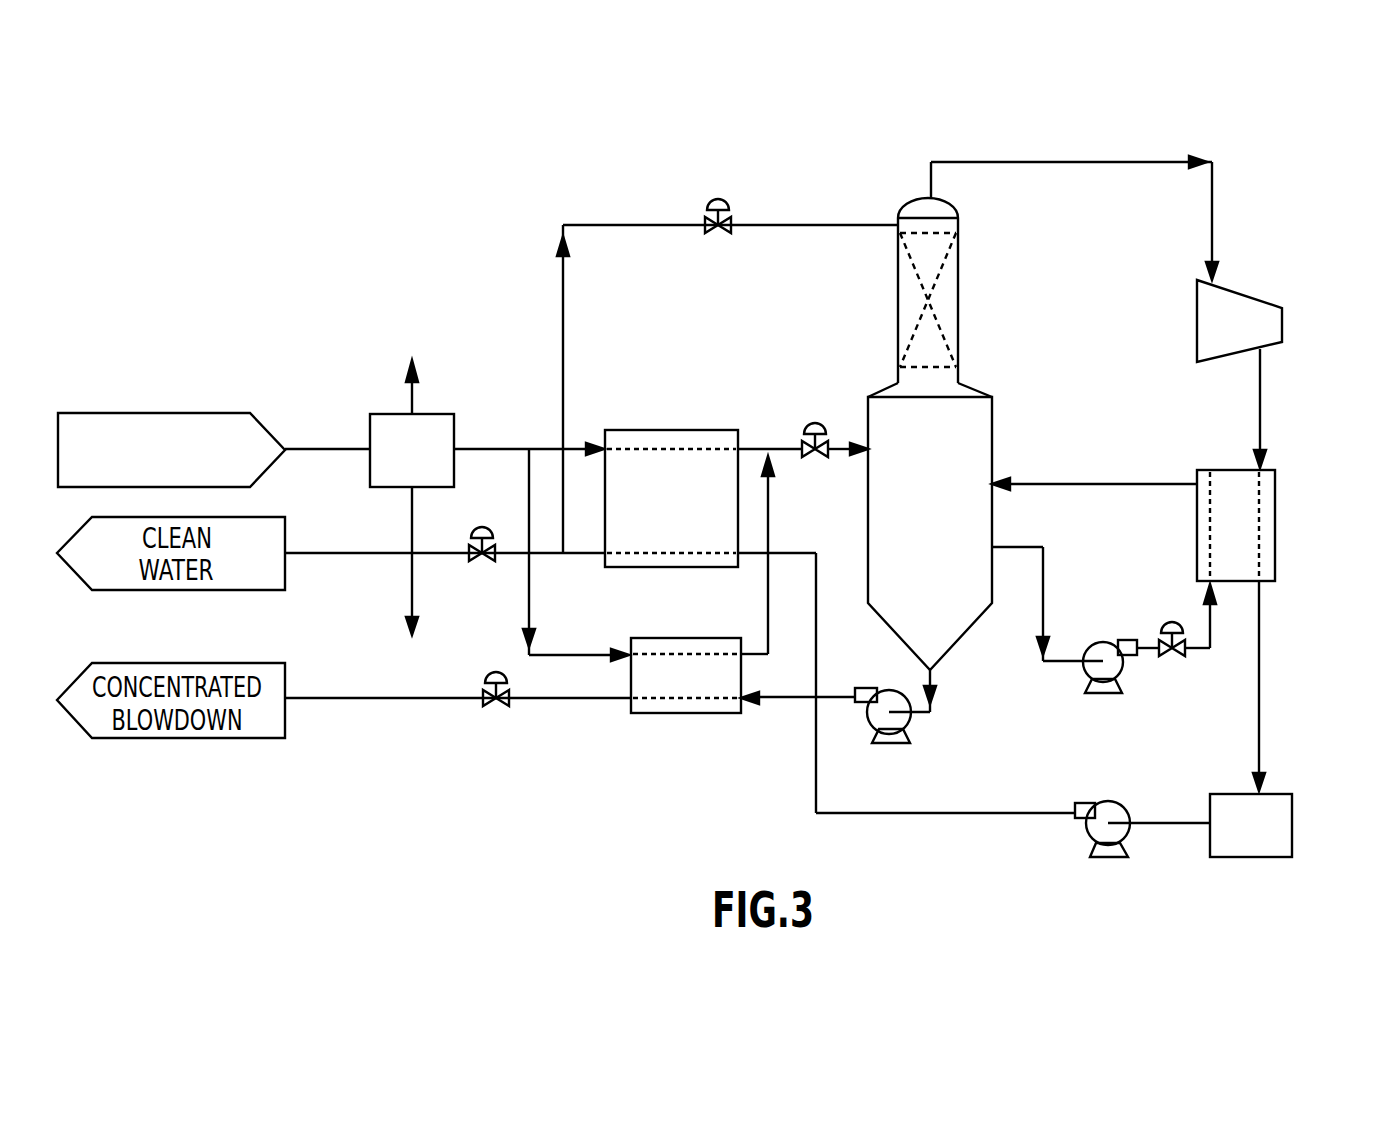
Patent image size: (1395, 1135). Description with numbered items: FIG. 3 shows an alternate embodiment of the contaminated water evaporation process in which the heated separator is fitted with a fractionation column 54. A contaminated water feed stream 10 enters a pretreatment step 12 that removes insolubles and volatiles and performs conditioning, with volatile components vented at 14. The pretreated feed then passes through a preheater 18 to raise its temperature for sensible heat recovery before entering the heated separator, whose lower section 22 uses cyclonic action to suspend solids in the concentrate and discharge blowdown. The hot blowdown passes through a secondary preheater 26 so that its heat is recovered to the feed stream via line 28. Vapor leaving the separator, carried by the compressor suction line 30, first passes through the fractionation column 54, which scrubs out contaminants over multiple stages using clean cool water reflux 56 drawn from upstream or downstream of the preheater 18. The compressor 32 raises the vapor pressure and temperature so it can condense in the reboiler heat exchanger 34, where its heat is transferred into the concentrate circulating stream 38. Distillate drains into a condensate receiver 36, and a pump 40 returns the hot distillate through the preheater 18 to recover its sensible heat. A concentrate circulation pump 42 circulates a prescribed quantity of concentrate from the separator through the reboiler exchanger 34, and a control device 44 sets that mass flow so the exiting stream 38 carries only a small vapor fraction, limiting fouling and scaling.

The contaminated water feed stream 10 is at (220, 413).
The pretreatment step 12 is at (437, 449).
The volatile vent 14 is at (413, 403).
The preheater 18 is at (668, 430).
The lower section of heated separator 22 is at (950, 630).
The secondary preheater 26 is at (677, 705).
The blowdown heat recovery line 28 is at (787, 700).
The vapor line 30 is at (1080, 162).
The compressor 32 is at (1238, 322).
The reboiler heat exchanger 34 is at (1262, 527).
The condensate receiver 36 is at (1275, 820).
The concentrate circulating stream 38 is at (1097, 484).
The pump 40 is at (1128, 833).
The concentrate circulation pump 42 is at (1113, 660).
The control device 44 is at (1170, 620).
The fractionation column 54 is at (945, 300).
The clean cool water reflux 56 is at (650, 224).